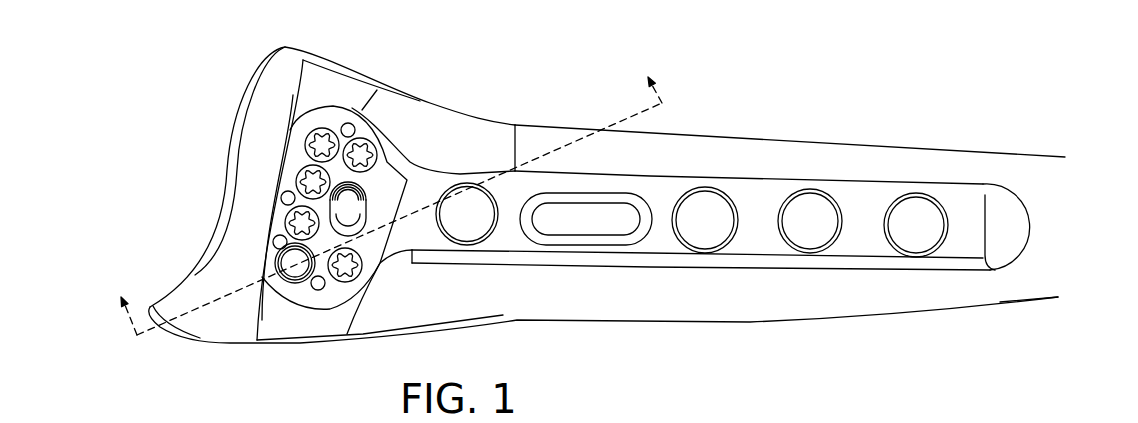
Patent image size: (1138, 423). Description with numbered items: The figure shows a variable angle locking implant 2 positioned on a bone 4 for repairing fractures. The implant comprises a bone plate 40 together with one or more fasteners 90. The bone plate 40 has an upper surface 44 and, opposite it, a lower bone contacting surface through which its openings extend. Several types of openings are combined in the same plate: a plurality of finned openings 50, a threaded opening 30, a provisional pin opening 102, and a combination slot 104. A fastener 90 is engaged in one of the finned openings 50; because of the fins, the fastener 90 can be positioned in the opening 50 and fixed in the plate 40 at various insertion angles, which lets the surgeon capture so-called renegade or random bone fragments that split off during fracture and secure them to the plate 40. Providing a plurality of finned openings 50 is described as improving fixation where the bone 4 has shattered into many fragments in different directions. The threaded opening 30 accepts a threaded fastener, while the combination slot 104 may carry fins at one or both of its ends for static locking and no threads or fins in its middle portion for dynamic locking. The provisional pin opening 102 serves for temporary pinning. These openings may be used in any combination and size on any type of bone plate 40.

The variable angle locking implant 2 is at (798, 75).
The bone 4 is at (890, 147).
The threaded opening 30 is at (467, 233).
The bone plate 40 is at (675, 263).
The upper surface 44 is at (1012, 422).
The finned opening 50 is at (300, 172).
The fastener 90 is at (290, 290).
The provisional pin opening 102 is at (348, 123).
The combination slot 104 is at (348, 193).